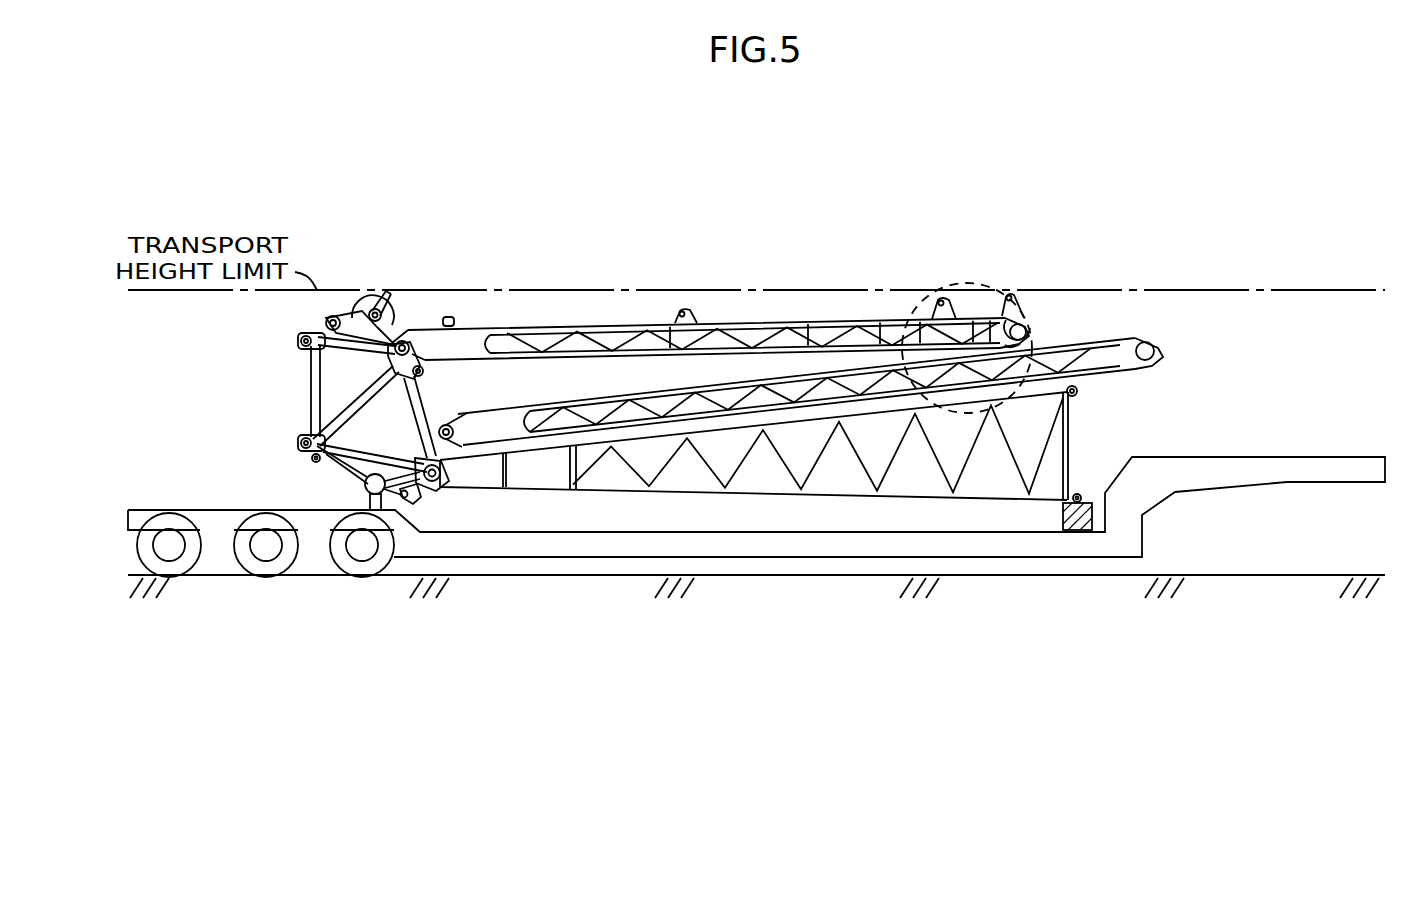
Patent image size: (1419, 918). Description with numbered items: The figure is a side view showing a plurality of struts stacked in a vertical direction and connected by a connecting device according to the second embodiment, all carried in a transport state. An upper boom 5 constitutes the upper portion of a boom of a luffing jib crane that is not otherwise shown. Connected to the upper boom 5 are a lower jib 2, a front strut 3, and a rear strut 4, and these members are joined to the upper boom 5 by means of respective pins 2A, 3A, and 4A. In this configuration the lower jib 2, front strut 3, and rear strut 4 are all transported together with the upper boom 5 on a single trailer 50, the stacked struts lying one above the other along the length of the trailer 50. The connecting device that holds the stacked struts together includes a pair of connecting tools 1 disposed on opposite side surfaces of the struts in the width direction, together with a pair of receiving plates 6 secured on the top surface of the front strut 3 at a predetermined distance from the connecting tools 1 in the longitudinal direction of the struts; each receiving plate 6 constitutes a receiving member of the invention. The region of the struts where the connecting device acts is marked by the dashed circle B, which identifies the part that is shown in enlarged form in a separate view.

The connecting tool 1 is at (907, 314).
The lower jib 2 is at (960, 502).
The pin 2A is at (432, 482).
The front strut 3 is at (612, 396).
The pin 3A is at (442, 424).
The rear strut 4 is at (787, 318).
The pin 4A is at (399, 344).
The upper boom 5 is at (314, 388).
The receiving plate 6 is at (1032, 334).
The trailer 50 is at (1222, 457).
The "B" part B is at (993, 283).